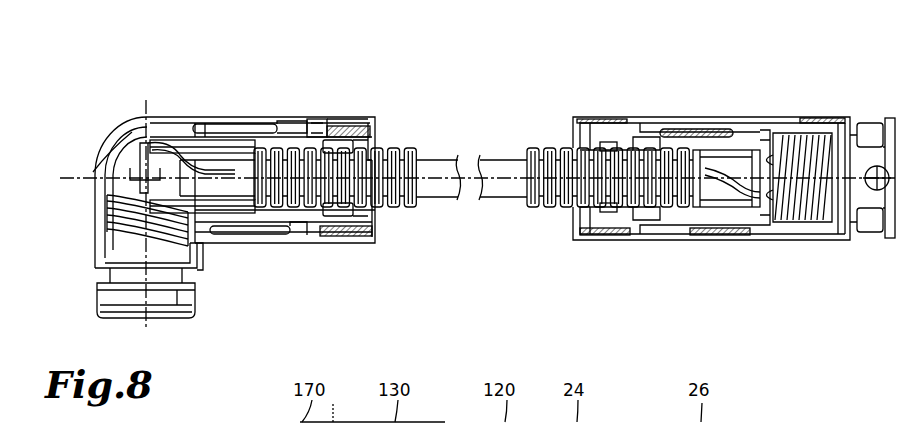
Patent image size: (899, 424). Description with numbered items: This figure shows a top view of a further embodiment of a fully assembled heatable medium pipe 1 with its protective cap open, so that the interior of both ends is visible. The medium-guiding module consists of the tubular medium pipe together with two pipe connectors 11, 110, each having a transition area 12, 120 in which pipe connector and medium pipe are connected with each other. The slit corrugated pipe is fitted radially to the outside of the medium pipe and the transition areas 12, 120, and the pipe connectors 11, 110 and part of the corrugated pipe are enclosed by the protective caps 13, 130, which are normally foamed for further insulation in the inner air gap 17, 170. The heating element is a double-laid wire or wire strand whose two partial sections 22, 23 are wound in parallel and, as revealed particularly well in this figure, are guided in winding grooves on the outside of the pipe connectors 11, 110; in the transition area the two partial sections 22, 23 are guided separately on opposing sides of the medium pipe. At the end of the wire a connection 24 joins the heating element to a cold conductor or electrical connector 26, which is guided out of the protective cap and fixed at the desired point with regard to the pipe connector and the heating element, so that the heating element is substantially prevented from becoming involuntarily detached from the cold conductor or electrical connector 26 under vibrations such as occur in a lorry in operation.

The heatable medium pipe 1 is at (459, 258).
The pipe connector 11 is at (677, 117).
The transition area 12 is at (723, 202).
The protective cap 13 is at (747, 117).
The inner air gap 17 is at (612, 137).
The partial section 22 is at (98, 235).
The partial section 23 is at (98, 173).
The connection 24 is at (305, 118).
The cold conductor or electrical connector 26 is at (359, 117).
The pipe connector 110 is at (205, 115).
The transition area 120 is at (238, 200).
The protective cap 130 is at (282, 113).
The inner air gap 170 is at (118, 132).